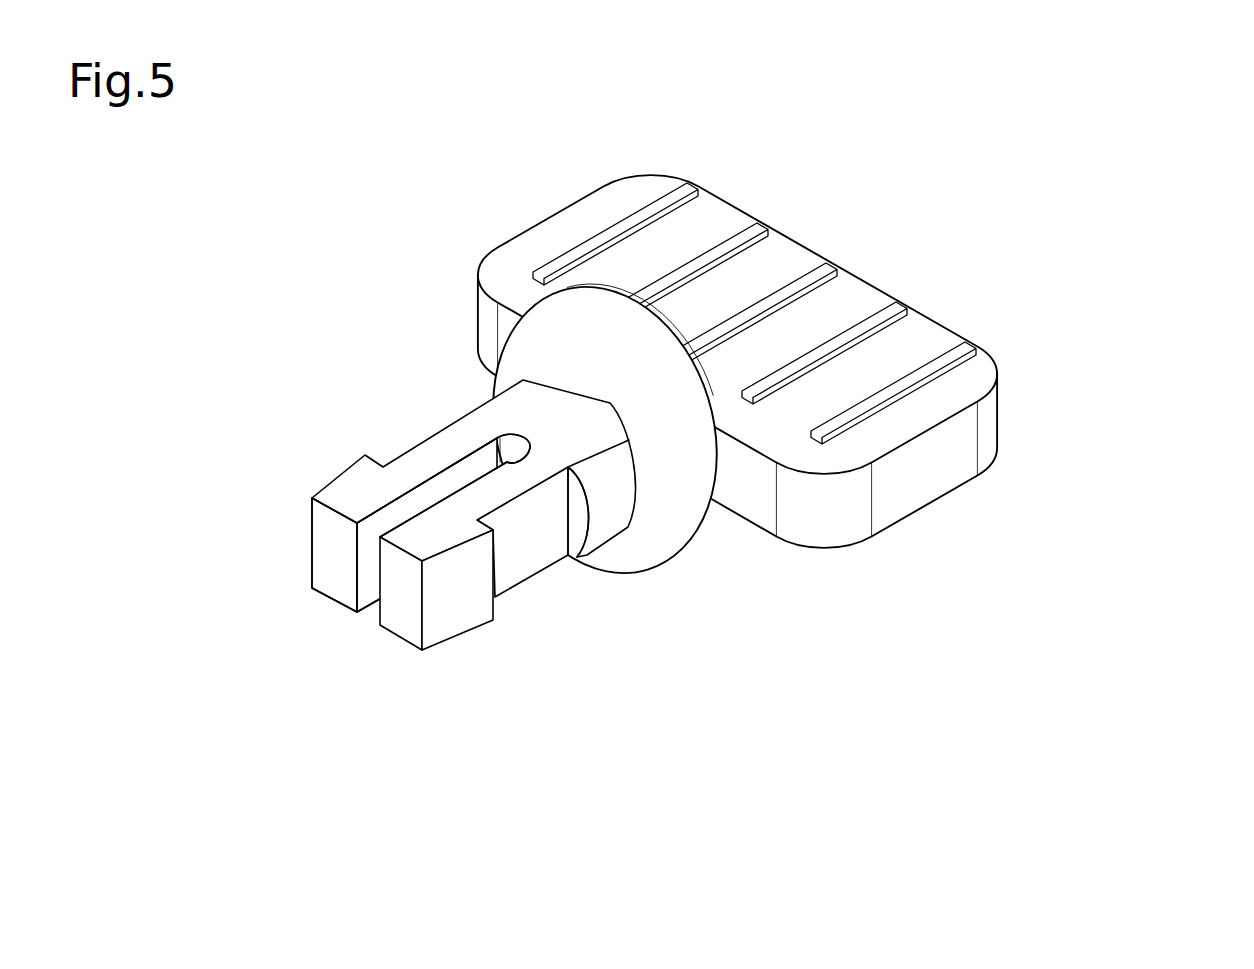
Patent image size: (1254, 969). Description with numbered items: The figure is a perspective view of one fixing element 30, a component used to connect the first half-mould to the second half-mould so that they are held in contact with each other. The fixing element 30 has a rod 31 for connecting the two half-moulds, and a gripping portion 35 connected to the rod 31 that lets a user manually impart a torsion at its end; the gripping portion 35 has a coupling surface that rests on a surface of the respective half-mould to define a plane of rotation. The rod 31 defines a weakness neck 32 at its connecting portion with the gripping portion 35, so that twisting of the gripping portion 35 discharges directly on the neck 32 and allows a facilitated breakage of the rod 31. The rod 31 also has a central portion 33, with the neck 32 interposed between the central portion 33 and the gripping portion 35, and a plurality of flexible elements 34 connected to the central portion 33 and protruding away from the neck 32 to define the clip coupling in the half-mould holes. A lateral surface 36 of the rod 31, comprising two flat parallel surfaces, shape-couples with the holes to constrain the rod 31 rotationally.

The fixing element 30 is at (858, 397).
The rod 31 is at (442, 439).
The weakness neck 32 is at (582, 363).
The central portion 33 is at (628, 598).
The flexible elements 34 is at (324, 632).
The gripping portion 35 is at (808, 288).
The lateral surface 36 is at (533, 557).